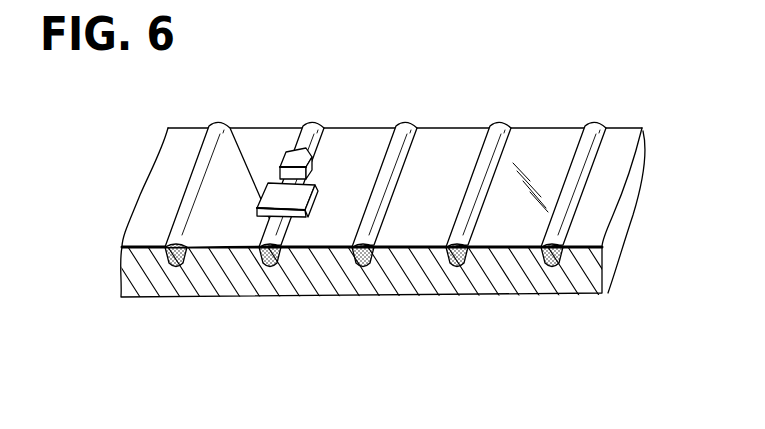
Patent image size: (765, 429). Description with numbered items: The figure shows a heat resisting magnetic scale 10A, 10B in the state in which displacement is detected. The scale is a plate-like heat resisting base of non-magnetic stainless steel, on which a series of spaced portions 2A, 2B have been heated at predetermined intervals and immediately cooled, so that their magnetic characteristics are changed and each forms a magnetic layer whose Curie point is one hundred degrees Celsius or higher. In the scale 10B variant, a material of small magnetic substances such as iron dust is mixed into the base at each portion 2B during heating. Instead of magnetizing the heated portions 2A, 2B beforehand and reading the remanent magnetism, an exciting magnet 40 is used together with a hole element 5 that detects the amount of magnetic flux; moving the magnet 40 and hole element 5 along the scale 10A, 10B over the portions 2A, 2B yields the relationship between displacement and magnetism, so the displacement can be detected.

The exciting magnet 40 is at (290, 150).
The hole element 5 is at (297, 200).
The portion to be heated 2A is at (590, 124).
The portion to be heated 2B is at (478, 194).
The heat resisting magnetic scale 10A is at (492, 302).
The heat resisting magnetic scale 10B is at (383, 210).